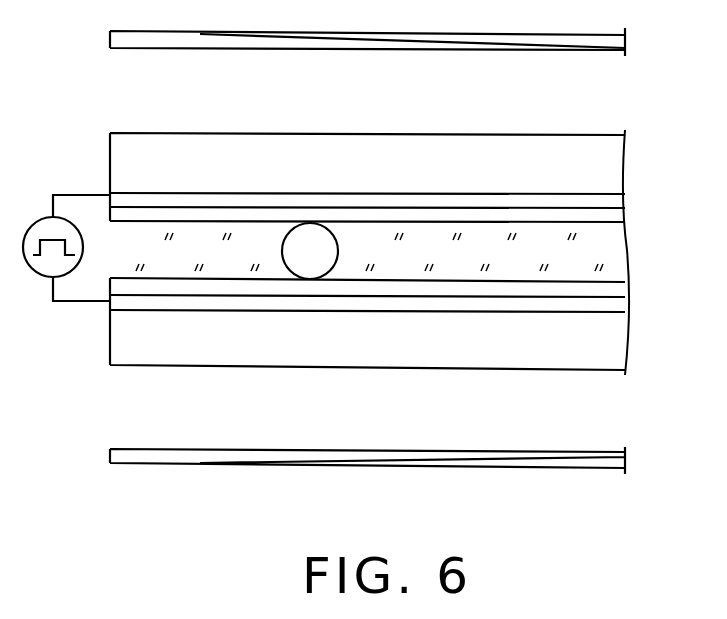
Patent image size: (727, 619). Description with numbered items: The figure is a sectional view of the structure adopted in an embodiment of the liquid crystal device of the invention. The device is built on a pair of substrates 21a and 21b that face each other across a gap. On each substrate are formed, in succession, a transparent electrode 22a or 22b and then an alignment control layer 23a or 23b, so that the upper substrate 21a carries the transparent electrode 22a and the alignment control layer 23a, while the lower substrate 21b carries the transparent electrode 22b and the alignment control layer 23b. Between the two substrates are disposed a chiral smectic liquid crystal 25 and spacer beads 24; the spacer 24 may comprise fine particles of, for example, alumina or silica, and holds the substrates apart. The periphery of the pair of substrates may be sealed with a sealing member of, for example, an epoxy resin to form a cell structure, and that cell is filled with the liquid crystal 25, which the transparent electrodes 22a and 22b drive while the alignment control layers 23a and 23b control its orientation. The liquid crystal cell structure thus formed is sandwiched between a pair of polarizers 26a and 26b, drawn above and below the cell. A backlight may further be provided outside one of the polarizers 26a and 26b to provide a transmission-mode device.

The substrate 21a is at (612, 167).
The substrate 21b is at (612, 347).
The transparent electrode 22a is at (618, 205).
The transparent electrode 22b is at (618, 305).
The alignment control layer 23a is at (618, 212).
The alignment control layer 23b is at (617, 291).
The spacer beads 24 is at (318, 238).
The chiral smectic liquid crystal 25 is at (427, 243).
The polarizer 26a is at (626, 42).
The polarizer 26b is at (626, 458).